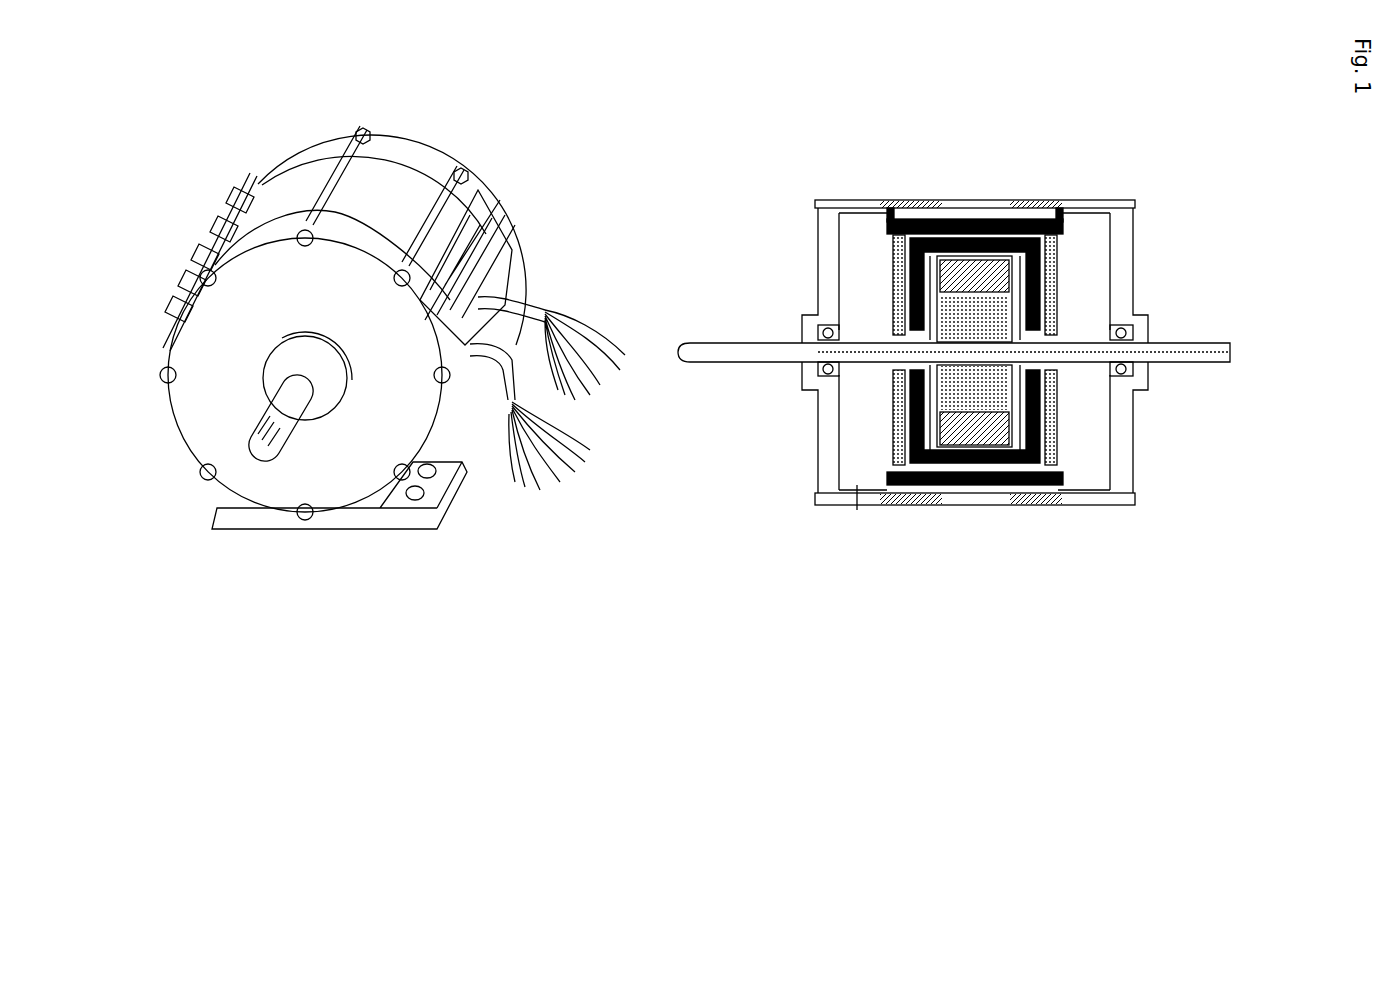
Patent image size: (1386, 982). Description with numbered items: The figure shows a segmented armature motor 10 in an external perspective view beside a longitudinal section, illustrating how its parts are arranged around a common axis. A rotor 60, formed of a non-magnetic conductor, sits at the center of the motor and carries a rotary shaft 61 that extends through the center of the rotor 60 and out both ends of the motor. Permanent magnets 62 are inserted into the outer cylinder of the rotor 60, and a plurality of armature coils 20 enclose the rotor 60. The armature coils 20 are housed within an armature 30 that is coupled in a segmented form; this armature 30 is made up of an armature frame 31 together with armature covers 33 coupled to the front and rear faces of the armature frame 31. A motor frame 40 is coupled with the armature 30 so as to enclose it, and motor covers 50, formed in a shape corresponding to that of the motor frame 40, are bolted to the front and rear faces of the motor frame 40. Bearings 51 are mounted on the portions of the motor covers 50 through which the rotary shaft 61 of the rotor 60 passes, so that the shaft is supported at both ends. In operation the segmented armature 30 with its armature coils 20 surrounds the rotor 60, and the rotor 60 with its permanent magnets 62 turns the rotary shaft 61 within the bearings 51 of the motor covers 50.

The segmented armature motor 10 is at (1140, 533).
The armature coils 20 is at (1058, 244).
The armature 30 is at (1140, 207).
The armature frame 31 is at (982, 490).
The armature covers 33 is at (1058, 405).
The motor frame 40 is at (1000, 202).
The motor covers 50 is at (1102, 200).
The bearings 51 is at (805, 333).
The rotor 60 is at (1008, 340).
The rotary shaft 61 is at (1167, 358).
The permanent magnets 62 is at (1022, 288).